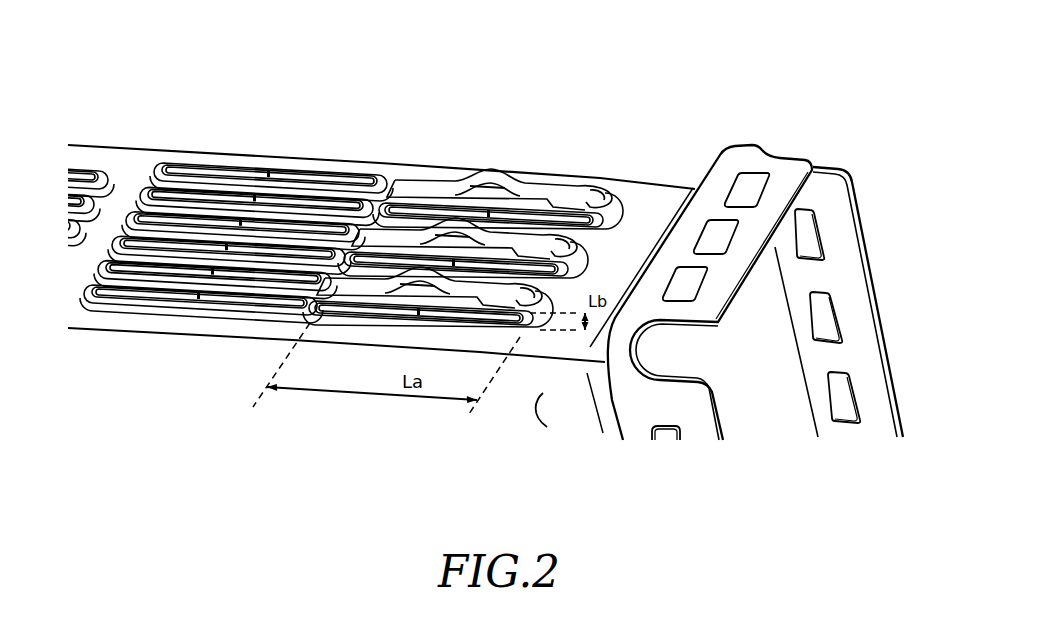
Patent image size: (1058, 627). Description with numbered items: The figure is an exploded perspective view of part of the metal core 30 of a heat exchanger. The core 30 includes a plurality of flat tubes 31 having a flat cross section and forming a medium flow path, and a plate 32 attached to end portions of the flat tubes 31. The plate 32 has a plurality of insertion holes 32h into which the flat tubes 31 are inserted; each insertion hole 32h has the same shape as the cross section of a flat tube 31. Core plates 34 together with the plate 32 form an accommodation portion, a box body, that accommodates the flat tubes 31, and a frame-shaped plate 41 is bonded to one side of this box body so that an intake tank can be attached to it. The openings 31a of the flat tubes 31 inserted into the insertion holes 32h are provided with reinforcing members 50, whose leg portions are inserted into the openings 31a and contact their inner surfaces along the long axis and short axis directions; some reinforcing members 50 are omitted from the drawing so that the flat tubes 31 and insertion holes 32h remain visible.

The core 30 is at (672, 135).
The flat tube 31 is at (333, 170).
The opening 31a is at (313, 177).
The plate 32 is at (128, 180).
The insertion hole 32h is at (380, 157).
The core plate 34 is at (547, 427).
The frame-shaped plate 41 is at (750, 333).
The reinforcing member 50 is at (567, 187).